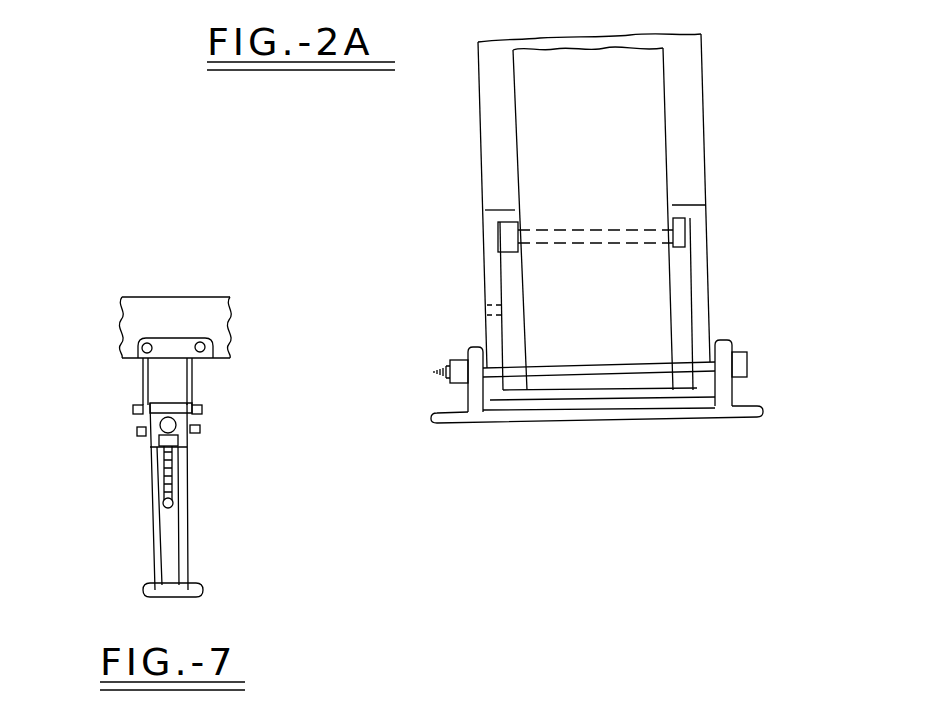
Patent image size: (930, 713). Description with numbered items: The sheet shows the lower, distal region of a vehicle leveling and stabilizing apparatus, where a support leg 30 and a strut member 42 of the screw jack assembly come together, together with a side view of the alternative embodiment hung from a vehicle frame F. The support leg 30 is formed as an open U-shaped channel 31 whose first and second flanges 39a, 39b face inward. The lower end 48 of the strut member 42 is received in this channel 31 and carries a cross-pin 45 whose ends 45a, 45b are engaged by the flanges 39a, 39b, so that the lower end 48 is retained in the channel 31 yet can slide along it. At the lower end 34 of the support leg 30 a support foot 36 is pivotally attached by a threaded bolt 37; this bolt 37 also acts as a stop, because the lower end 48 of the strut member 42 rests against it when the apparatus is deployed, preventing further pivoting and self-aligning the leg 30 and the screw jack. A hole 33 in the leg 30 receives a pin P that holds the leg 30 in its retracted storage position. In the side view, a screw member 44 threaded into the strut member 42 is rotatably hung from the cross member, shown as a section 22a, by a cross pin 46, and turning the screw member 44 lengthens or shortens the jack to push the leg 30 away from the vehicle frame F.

In FIG. 2A, the support leg 30 is at (720, 275).
In FIG. 7, the support leg 30 is at (188, 480).
In FIG. 2A, the strut member 42 is at (665, 103).
In FIG. 7, the strut member 42 is at (168, 545).
In FIG. 2A, the first flange 39a is at (510, 210).
In FIG. 2A, the second flange 39b is at (675, 205).
In FIG. 2A, the hole 33 is at (485, 306).
In FIG. 2A, the lower end 48 is at (514, 338).
In FIG. 2A, the cross-pin 45 is at (613, 240).
In FIG. 2A, the cross-pin end 45a is at (505, 238).
In FIG. 2A, the cross-pin end 45b is at (687, 232).
In FIG. 2A, the channel 31 is at (682, 310).
In FIG. 2A, the lower end 34 is at (712, 335).
In FIG. 2A, the threaded bolt 37 is at (747, 358).
In FIG. 2A, the support foot 36 is at (650, 397).
In FIG. 7, the frame F is at (125, 297).
In FIG. 7, the mounting bracket 22a is at (143, 383).
In FIG. 7, the pin P is at (130, 432).
In FIG. 7, the cross pin 46 is at (201, 431).
In FIG. 7, the screw member 44 is at (175, 458).